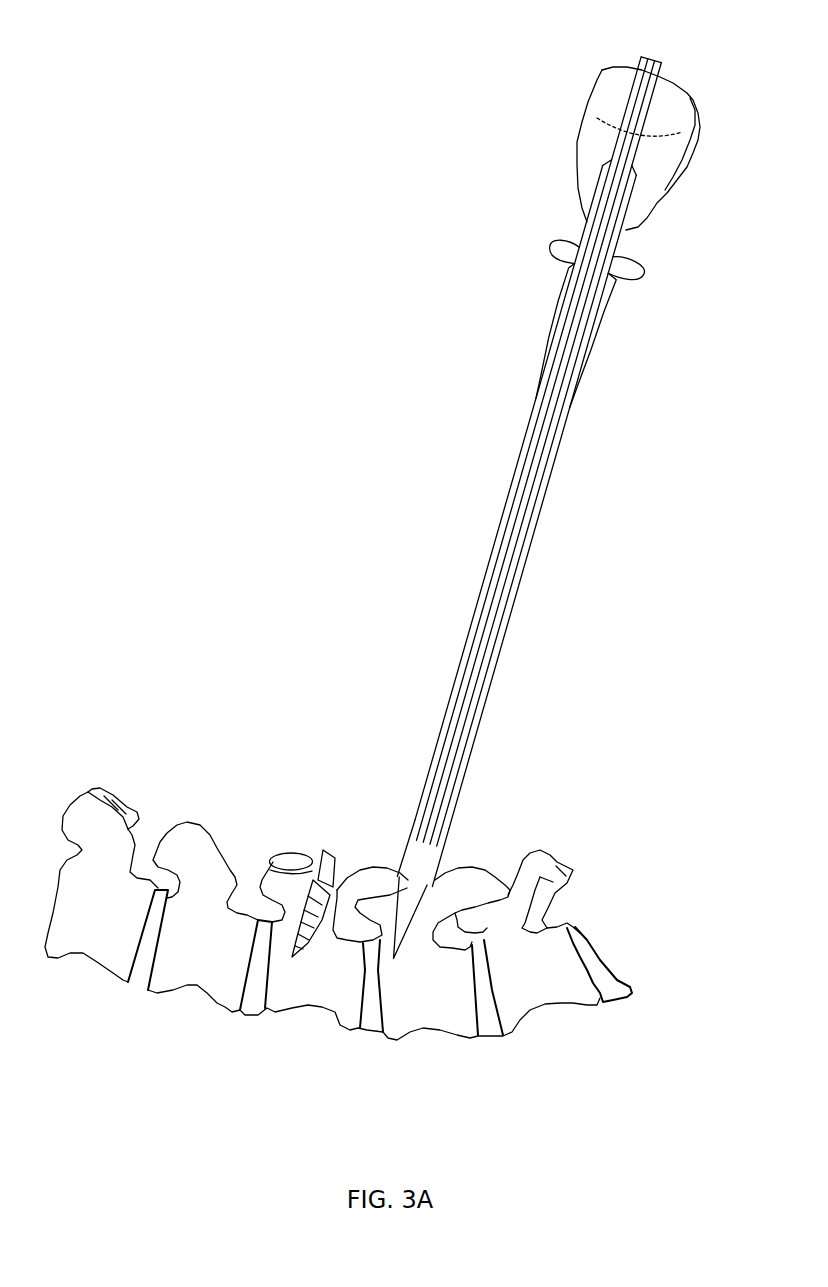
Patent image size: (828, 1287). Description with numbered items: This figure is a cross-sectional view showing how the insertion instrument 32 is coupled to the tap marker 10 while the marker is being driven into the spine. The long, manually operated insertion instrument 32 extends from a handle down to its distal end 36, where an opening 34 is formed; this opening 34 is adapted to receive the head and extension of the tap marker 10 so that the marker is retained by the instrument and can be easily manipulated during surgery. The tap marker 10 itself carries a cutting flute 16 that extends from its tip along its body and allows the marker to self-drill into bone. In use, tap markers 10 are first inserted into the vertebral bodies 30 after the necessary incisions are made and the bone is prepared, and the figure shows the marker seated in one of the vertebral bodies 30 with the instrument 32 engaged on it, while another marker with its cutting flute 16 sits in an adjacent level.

The tap marker 10 is at (533, 504).
The cutting flute 16 is at (330, 852).
The vertebral bodies 30 is at (448, 1013).
The insertion instrument 32 is at (578, 388).
The opening 34 is at (433, 838).
The distal end 36 is at (430, 883).